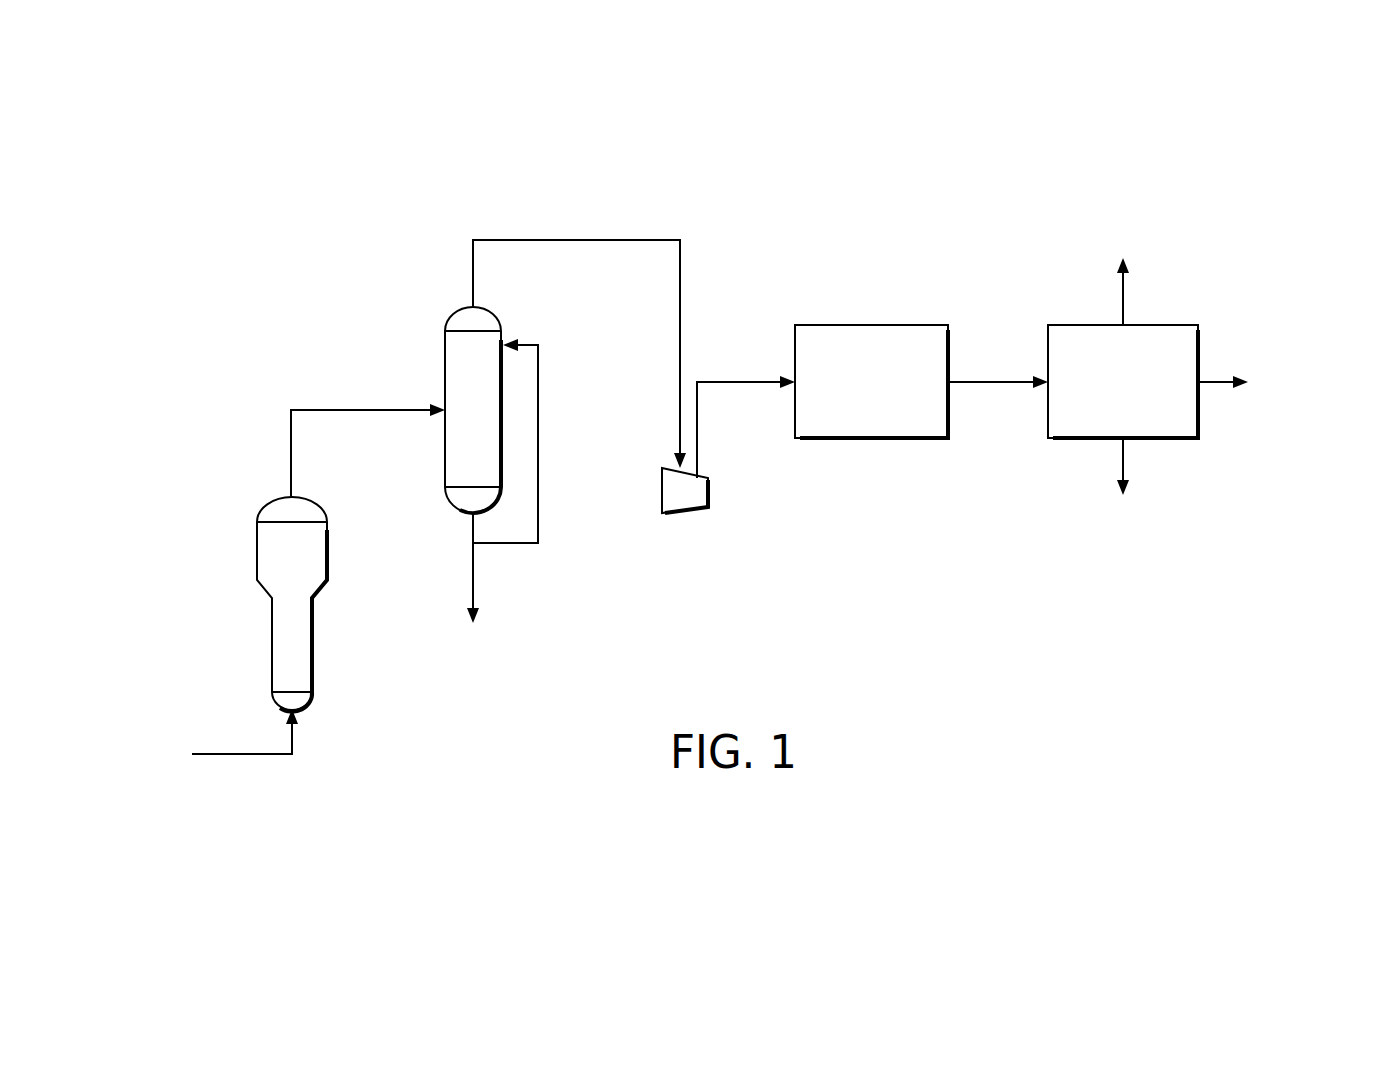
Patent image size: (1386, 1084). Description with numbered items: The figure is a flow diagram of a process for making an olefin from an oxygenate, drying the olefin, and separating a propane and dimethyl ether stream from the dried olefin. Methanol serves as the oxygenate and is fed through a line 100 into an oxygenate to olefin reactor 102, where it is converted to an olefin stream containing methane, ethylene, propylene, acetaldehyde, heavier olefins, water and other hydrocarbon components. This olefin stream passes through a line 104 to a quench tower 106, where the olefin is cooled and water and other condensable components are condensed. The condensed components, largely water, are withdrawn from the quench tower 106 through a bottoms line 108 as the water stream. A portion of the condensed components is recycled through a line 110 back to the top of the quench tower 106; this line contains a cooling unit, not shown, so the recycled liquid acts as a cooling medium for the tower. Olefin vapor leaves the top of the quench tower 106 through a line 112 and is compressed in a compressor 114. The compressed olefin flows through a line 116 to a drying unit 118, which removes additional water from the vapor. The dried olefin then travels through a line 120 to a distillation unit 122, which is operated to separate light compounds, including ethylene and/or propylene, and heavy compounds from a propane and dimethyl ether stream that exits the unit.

The line 100 is at (247, 756).
The oxygenate to olefin reactor 102 is at (328, 565).
The line 104 is at (332, 408).
The quench tower 106 is at (505, 338).
The bottoms line 108 is at (475, 563).
The line 110 is at (539, 475).
The line 112 is at (628, 240).
The compressor 114 is at (685, 518).
The line 116 is at (712, 380).
The drying unit 118 is at (871, 381).
The line 120 is at (1010, 381).
The distillation unit 122 is at (1212, 377).